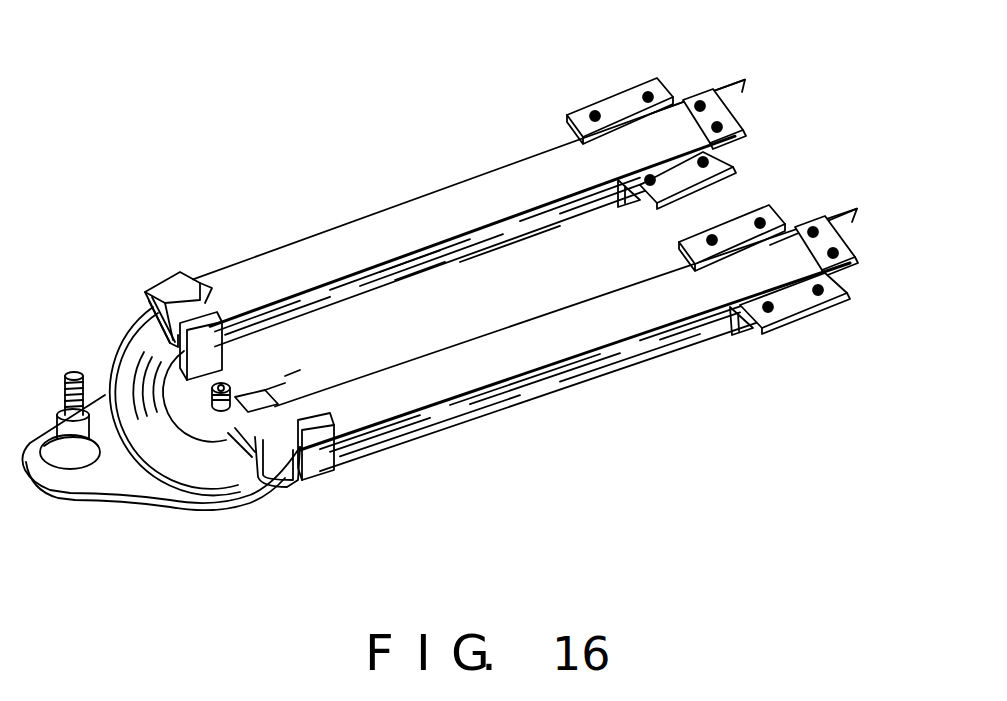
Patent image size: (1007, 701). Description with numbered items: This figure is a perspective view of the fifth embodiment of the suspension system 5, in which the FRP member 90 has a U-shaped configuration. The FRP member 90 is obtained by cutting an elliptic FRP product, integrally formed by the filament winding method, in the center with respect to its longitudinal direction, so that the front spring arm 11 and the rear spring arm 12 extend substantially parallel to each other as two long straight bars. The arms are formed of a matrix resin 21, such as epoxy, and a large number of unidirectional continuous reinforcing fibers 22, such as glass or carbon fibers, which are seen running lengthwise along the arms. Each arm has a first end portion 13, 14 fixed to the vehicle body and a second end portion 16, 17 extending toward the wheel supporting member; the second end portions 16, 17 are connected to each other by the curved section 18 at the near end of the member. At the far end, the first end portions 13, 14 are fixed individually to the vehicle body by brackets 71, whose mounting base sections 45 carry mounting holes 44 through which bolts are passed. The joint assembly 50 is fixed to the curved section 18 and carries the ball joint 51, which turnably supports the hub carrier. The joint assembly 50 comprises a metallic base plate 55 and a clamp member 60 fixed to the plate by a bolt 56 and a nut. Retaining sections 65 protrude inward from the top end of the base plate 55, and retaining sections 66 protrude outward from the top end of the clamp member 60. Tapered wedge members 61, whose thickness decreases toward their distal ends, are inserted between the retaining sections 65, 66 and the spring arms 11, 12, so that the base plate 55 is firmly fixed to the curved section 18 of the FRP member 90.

The suspension system 5 is at (487, 105).
The front spring arm 11 is at (427, 203).
The rear spring arm 12 is at (610, 372).
The first end portion 13 is at (657, 147).
The first end portion 14 is at (760, 282).
The second end portion 16 is at (218, 297).
The second end portion 17 is at (378, 452).
The curved section 18 is at (117, 383).
The matrix resin 21 is at (493, 246).
The reinforcing fibers 22 is at (424, 264).
The mounting holes 44 is at (648, 97).
The mounting base sections 45 is at (590, 108).
The joint assembly 50 is at (173, 520).
The ball joint 51 is at (72, 477).
The base plate 55 is at (128, 487).
The bolt 56 is at (285, 365).
The clamp member 60 is at (228, 372).
The wedge member 61 is at (145, 325).
The retaining sections 65 is at (180, 280).
The retaining sections 66 is at (205, 285).
The brackets 71 is at (630, 208).
The FRP member 90 is at (506, 418).